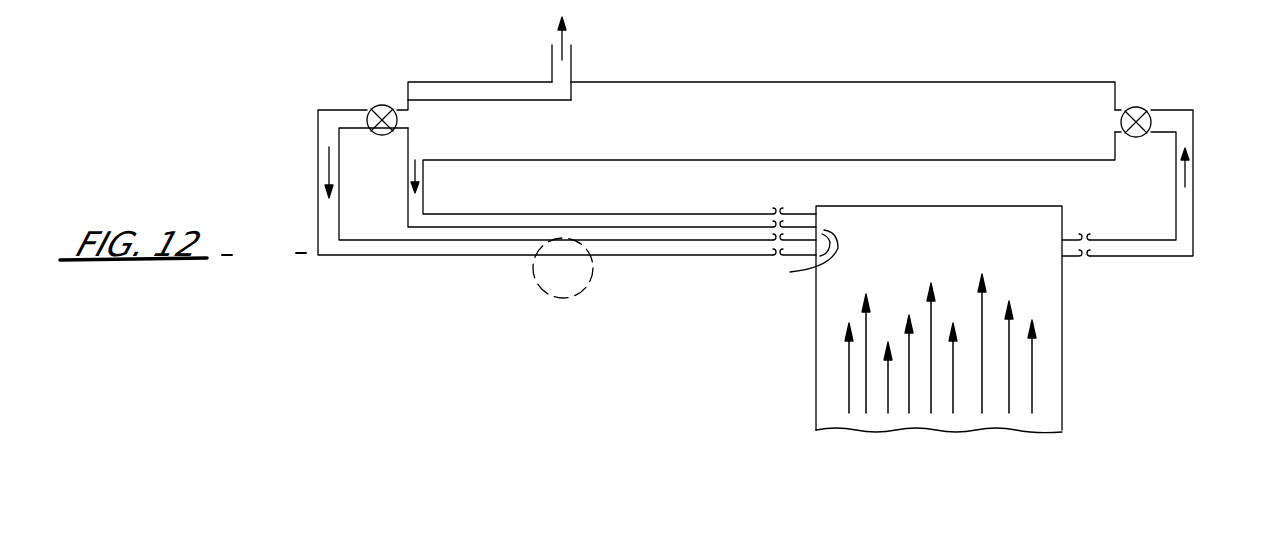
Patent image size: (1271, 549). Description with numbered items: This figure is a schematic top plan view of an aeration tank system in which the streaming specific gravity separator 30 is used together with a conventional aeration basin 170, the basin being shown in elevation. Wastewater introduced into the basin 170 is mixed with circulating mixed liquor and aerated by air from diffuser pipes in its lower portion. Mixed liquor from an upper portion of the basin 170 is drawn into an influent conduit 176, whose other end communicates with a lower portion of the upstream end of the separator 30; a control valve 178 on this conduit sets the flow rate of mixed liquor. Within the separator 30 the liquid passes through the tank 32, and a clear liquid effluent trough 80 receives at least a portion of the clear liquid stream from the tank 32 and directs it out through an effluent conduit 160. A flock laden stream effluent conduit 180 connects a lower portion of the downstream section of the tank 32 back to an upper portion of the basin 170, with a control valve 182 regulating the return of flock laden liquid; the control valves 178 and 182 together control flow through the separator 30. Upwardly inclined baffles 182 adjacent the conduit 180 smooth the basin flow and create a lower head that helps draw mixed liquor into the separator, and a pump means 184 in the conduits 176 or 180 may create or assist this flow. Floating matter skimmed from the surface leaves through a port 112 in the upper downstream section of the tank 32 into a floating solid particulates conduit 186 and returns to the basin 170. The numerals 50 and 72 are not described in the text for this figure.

The separator 30 is at (1011, 69).
The tank 32 is at (838, 82).
The conduit junction 50 is at (1118, 108).
The conduit 72 is at (407, 127).
The clear liquid effluent trough 80 is at (482, 90).
The port 112 is at (423, 160).
The effluent conduit 160 is at (566, 72).
The aeration basin 170 is at (1050, 308).
The influent conduit 176 is at (1170, 248).
The control valve 178 is at (1143, 108).
The flock laden stream effluent conduit 180 is at (338, 110).
The control valve 182 is at (382, 105).
The pump means 184 is at (577, 288).
The floating solid particulates conduit 186 is at (509, 222).